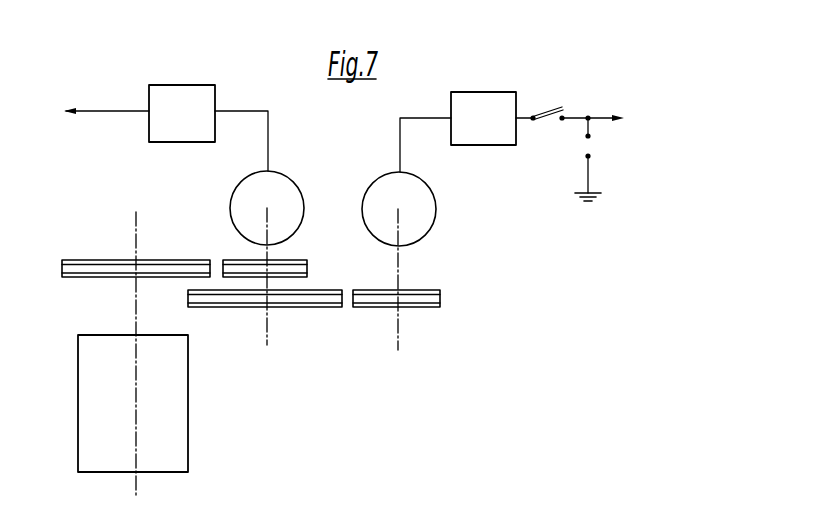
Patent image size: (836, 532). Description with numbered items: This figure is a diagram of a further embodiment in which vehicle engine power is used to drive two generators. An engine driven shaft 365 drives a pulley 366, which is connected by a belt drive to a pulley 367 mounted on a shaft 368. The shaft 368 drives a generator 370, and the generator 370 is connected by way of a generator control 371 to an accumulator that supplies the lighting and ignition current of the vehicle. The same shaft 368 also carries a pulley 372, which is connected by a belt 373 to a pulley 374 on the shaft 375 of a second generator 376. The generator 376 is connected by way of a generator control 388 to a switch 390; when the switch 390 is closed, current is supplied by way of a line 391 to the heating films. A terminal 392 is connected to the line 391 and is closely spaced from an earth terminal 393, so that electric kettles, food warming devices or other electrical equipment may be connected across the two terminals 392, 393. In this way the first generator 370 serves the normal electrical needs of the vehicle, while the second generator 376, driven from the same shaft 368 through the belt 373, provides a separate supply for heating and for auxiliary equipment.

The engine driven shaft 365 is at (133, 306).
The pulley 366 is at (166, 259).
The pulley 367 is at (243, 262).
The shaft 368 is at (266, 257).
The generator 370 is at (248, 188).
The generator control 371 is at (179, 92).
The pulley 372 is at (191, 307).
The belt 373 is at (350, 306).
The pulley 374 is at (410, 308).
The shaft 375 is at (397, 253).
The generator 376 is at (423, 203).
The generator control 388 is at (473, 137).
The switch 390 is at (591, 96).
The line 391 is at (605, 112).
The terminal 392 is at (590, 137).
The earth terminal 393 is at (588, 156).